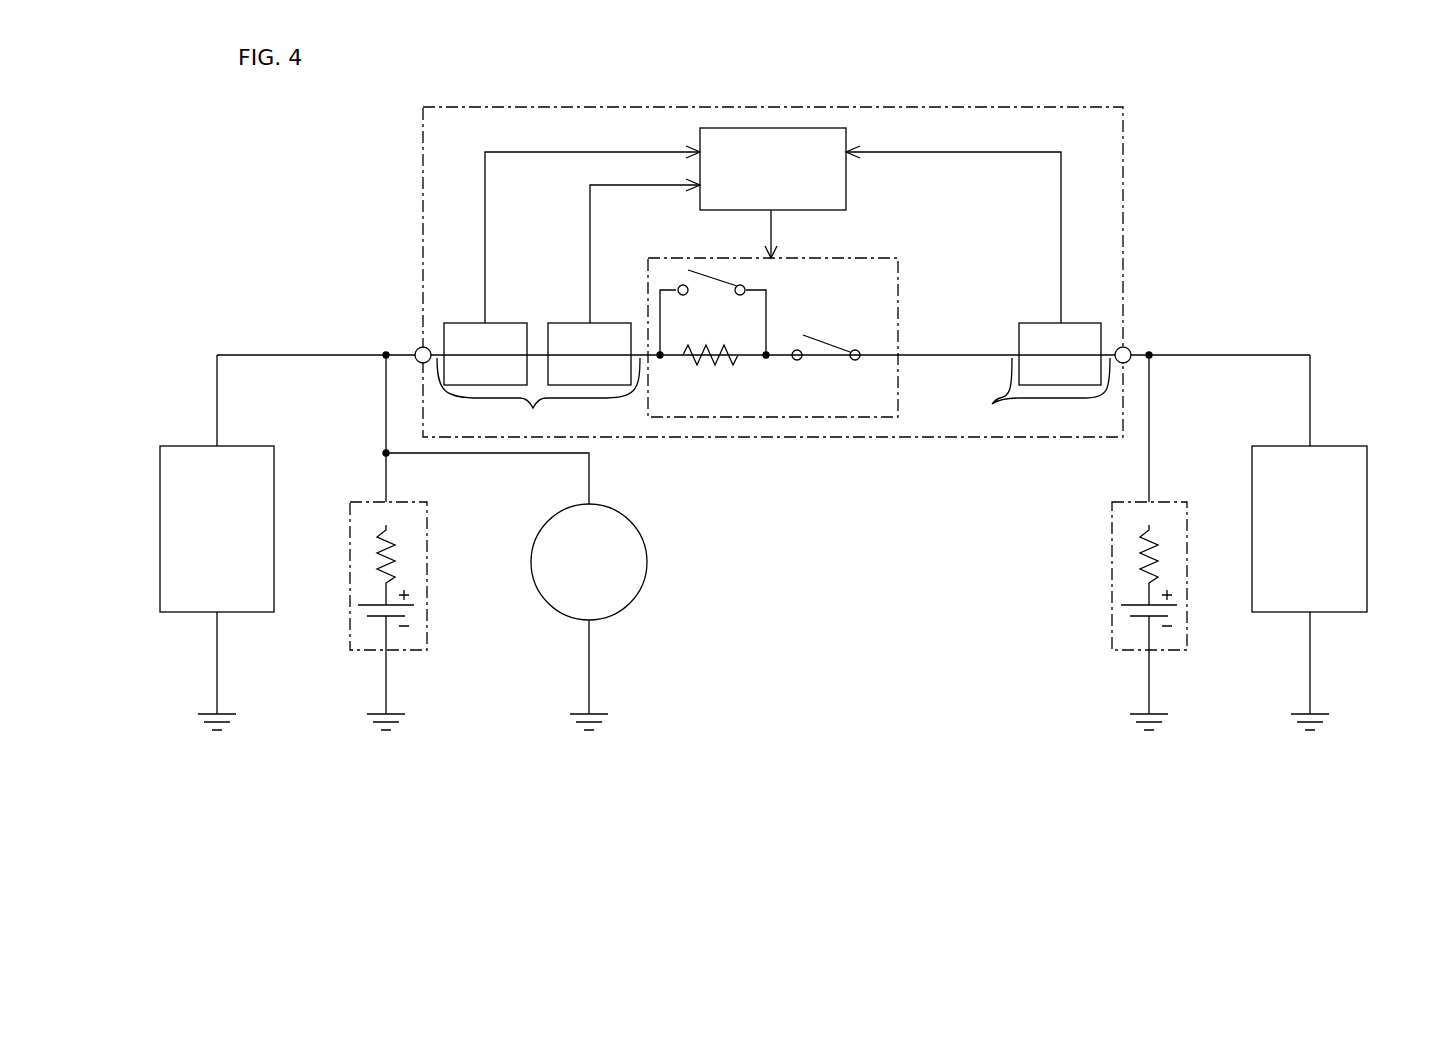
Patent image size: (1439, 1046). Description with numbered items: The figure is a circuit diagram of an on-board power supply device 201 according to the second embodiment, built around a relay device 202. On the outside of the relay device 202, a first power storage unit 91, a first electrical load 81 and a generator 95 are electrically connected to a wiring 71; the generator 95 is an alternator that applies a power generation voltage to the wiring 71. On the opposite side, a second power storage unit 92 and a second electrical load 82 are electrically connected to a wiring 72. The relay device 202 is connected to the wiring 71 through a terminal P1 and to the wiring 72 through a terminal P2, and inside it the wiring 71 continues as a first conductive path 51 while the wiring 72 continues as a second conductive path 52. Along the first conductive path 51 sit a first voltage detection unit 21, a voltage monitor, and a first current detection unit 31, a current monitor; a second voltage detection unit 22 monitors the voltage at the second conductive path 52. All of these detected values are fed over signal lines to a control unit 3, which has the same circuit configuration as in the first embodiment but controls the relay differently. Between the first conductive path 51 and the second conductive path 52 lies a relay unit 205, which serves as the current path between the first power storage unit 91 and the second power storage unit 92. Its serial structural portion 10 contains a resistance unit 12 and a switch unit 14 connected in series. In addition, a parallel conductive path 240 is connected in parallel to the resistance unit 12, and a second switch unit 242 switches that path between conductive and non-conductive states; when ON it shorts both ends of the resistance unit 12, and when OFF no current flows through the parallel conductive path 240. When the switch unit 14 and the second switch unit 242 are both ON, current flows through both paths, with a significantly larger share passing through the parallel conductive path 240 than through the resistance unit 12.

The control unit 3 is at (848, 133).
The serial structural portion 10 is at (775, 372).
The resistance unit 12 is at (722, 362).
The switch unit 14 is at (822, 341).
The first voltage detection unit 21 is at (508, 323).
The second voltage detection unit 22 is at (1040, 323).
The first current detection unit 31 is at (604, 323).
The first conductive path 51 is at (538, 397).
The second conductive path 52 is at (1044, 397).
The wiring 71 is at (349, 352).
The wiring 72 is at (1210, 352).
The first electrical load 81 is at (160, 582).
The second electrical load 82 is at (1367, 582).
The first power storage unit 91 is at (350, 620).
The second power storage unit 92 is at (1187, 622).
The generator 95 is at (553, 611).
The on-board power supply device 201 is at (1243, 152).
The relay device 202 is at (1070, 107).
The relay unit 205 is at (843, 257).
The parallel conductive path 240 is at (778, 310).
The second switch unit 242 is at (708, 276).
The terminal P1 is at (431, 346).
The terminal P2 is at (1130, 348).